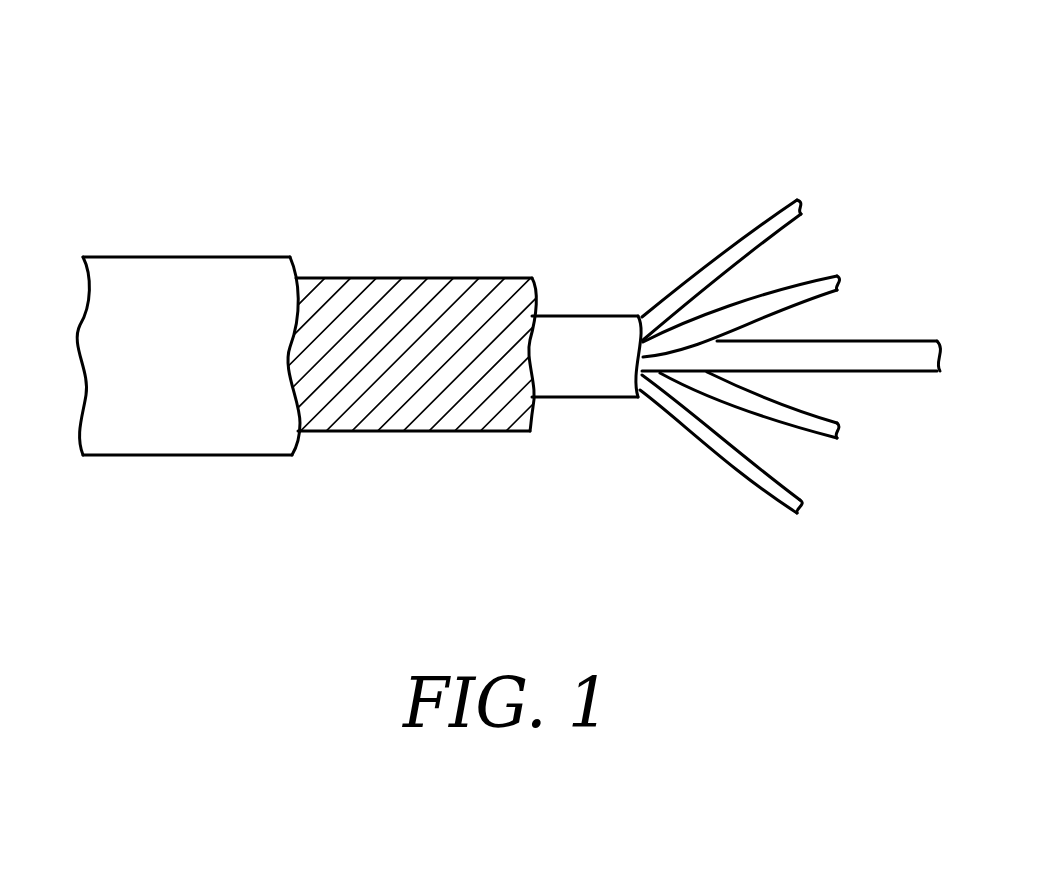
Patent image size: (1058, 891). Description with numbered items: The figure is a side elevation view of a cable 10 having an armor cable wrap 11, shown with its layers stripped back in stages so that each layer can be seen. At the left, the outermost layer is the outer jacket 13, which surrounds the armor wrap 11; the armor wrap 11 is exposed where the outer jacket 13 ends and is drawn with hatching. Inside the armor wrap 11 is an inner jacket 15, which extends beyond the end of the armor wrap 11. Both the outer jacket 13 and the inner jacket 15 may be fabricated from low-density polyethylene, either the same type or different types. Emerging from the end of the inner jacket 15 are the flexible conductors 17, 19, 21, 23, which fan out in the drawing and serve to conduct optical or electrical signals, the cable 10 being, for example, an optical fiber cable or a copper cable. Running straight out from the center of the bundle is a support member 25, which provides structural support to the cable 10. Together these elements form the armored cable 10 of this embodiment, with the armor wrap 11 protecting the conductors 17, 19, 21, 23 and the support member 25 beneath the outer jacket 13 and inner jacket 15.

The cable 10 is at (626, 99).
The armor cable wrap 11 is at (492, 277).
The outer jacket 13 is at (233, 256).
The inner jacket 15 is at (600, 315).
The flexible conductor 17 is at (755, 226).
The flexible conductor 19 is at (782, 288).
The flexible conductor 21 is at (808, 437).
The flexible conductor 23 is at (742, 470).
The support member 25 is at (885, 340).